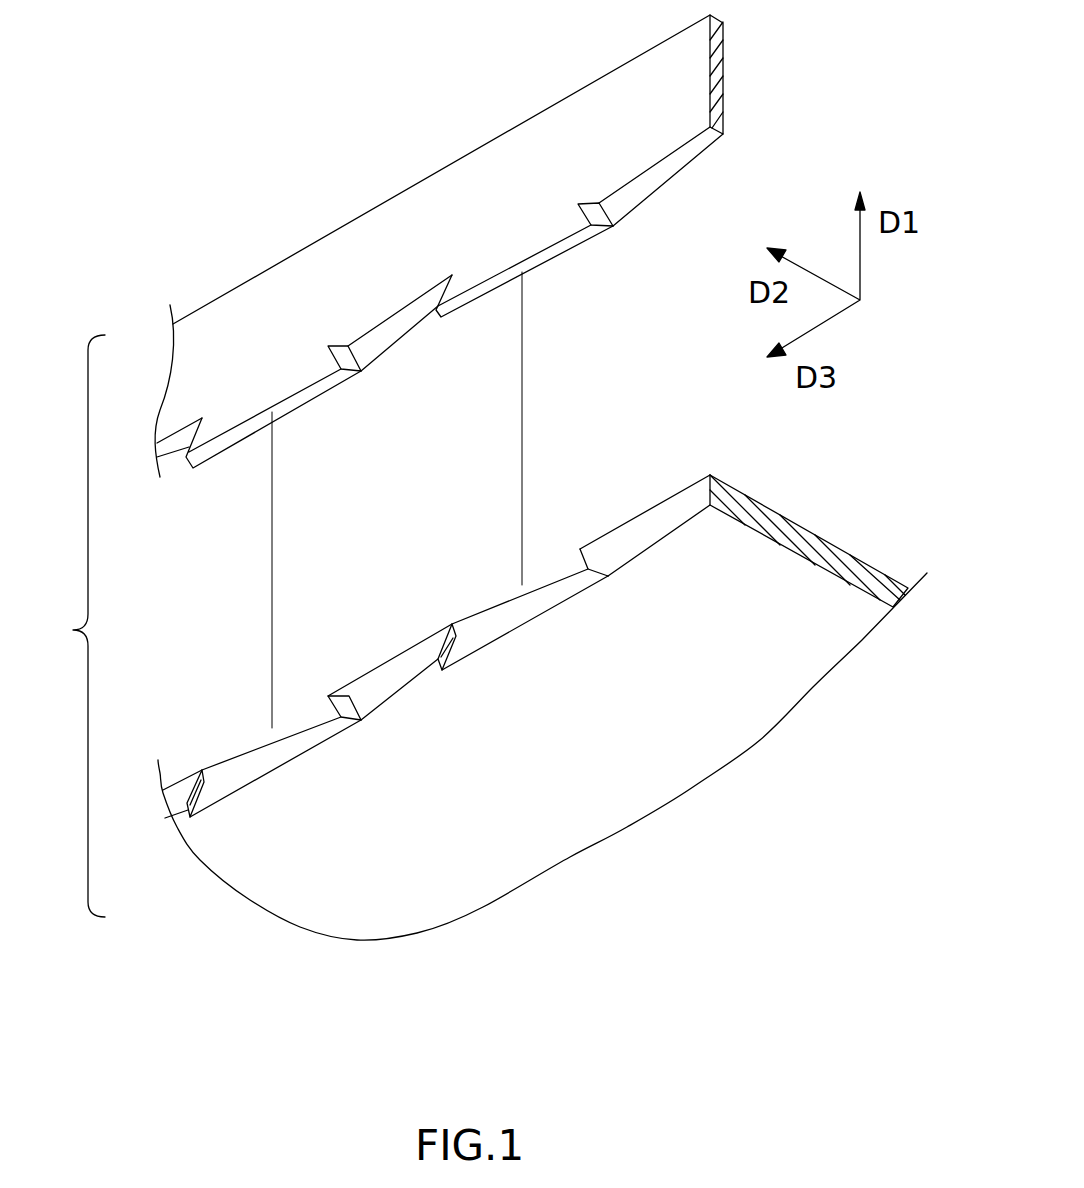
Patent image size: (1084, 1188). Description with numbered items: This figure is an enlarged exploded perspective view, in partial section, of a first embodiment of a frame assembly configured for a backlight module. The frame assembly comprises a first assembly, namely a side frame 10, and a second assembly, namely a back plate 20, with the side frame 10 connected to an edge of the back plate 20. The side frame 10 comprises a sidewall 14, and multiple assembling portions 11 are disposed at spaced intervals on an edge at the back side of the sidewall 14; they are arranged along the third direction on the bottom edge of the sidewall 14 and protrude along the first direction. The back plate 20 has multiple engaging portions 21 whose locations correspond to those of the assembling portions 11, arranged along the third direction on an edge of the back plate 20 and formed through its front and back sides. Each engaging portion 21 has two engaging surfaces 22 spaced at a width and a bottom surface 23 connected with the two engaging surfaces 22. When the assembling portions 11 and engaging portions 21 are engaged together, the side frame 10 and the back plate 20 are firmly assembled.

The side frame 10 is at (439, 243).
The assembling portion 11 is at (538, 232).
The sidewall 14 is at (631, 97).
The back plate 20 is at (542, 668).
The engaging portion 21 is at (397, 702).
The engaging surface 22 is at (445, 655).
The bottom surface 23 is at (533, 603).